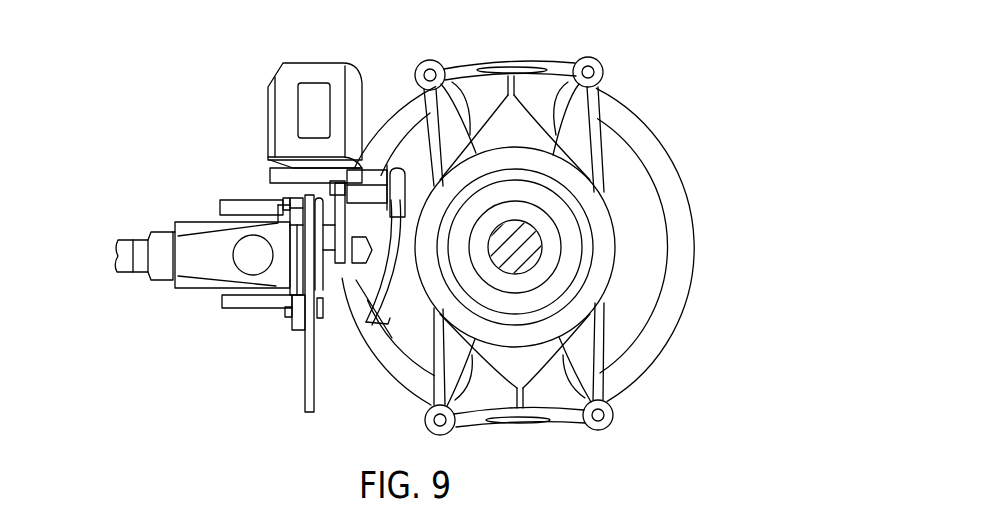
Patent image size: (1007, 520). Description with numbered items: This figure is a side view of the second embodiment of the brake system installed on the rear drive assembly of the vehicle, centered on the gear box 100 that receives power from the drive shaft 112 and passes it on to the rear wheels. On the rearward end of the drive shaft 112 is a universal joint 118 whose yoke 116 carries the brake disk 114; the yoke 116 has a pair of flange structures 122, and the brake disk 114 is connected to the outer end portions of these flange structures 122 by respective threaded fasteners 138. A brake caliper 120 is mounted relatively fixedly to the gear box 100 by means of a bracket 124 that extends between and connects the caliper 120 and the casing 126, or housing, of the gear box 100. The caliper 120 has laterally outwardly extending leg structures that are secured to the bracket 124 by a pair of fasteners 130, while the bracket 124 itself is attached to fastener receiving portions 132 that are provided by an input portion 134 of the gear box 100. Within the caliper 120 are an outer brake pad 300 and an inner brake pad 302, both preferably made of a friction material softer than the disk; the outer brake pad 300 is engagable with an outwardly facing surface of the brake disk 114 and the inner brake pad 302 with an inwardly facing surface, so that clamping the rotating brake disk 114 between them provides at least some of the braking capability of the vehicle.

The gear box 100 is at (650, 128).
The drive shaft 112 is at (124, 250).
The brake disk 114 is at (307, 400).
The yoke 116 is at (237, 303).
The universal joint 118 is at (188, 204).
The brake caliper 120 is at (300, 75).
The flange structures 122 is at (295, 330).
The bracket 124 is at (333, 185).
The casing 126 is at (652, 332).
The fasteners 130 is at (397, 163).
The fastener receiving portions 132 is at (358, 264).
The input portion 134 is at (398, 280).
The threaded fasteners 138 is at (285, 313).
The outer brake pad 300 is at (308, 212).
The inner brake pad 302 is at (293, 203).